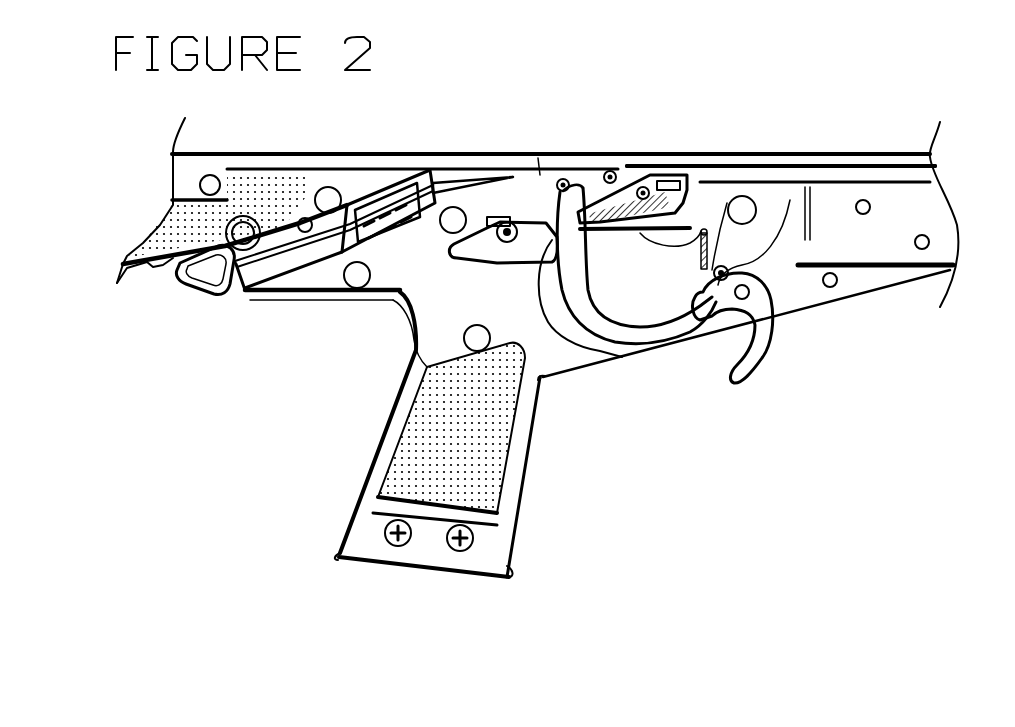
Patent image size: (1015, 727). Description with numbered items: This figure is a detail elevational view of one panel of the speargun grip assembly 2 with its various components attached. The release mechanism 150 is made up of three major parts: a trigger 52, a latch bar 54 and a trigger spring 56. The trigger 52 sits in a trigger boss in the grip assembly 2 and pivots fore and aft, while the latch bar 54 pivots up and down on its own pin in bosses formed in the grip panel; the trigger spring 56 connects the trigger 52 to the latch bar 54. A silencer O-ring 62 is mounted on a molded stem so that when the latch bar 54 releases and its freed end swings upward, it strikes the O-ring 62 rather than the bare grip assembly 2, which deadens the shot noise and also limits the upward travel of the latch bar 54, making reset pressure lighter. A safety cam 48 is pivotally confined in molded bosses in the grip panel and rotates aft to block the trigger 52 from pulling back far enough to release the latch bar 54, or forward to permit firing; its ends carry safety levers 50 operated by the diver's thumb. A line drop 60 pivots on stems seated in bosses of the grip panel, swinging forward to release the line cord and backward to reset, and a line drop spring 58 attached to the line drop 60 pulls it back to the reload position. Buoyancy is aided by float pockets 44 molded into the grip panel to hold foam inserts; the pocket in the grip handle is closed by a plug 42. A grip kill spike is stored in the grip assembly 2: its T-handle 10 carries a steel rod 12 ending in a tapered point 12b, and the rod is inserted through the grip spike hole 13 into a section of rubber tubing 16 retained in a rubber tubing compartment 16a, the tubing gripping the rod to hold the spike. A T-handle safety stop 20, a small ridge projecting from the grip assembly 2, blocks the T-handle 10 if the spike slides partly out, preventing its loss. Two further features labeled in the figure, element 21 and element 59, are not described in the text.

The grip assembly 2 is at (868, 284).
The T-handle 10 is at (180, 287).
The steel rod 12 is at (462, 160).
The tapered point 12b is at (486, 176).
The grip spike hole 13 is at (240, 272).
The rubber tubing 16 is at (398, 247).
The rubber tubing compartment 16a is at (353, 204).
The T-handle safety stop 20 is at (125, 273).
The trigger 21 is at (588, 264).
The plug 42 is at (497, 515).
The float pockets 44 is at (252, 180).
The safety cam 48 is at (512, 216).
The safety levers 50 is at (538, 160).
The trigger 52 is at (564, 178).
The latch bar 54 is at (683, 176).
The trigger spring 56 is at (708, 228).
The line drop spring 58 is at (703, 237).
The spring 59 is at (775, 240).
The line drop 60 is at (735, 374).
The silencer O-ring 62 is at (610, 170).
The release mechanism 150 is at (559, 387).